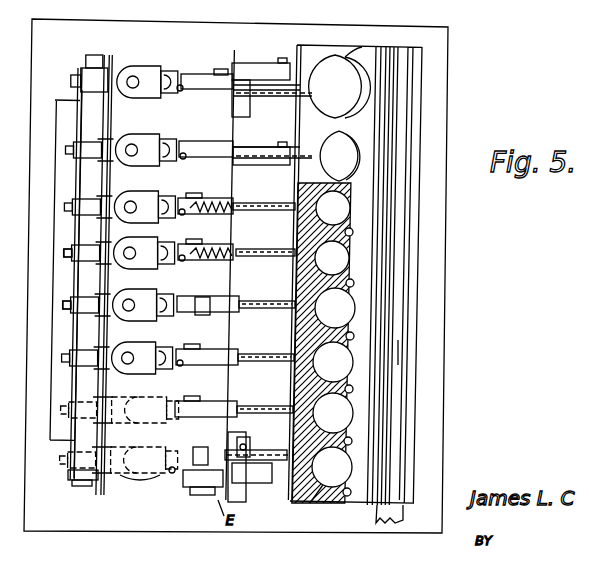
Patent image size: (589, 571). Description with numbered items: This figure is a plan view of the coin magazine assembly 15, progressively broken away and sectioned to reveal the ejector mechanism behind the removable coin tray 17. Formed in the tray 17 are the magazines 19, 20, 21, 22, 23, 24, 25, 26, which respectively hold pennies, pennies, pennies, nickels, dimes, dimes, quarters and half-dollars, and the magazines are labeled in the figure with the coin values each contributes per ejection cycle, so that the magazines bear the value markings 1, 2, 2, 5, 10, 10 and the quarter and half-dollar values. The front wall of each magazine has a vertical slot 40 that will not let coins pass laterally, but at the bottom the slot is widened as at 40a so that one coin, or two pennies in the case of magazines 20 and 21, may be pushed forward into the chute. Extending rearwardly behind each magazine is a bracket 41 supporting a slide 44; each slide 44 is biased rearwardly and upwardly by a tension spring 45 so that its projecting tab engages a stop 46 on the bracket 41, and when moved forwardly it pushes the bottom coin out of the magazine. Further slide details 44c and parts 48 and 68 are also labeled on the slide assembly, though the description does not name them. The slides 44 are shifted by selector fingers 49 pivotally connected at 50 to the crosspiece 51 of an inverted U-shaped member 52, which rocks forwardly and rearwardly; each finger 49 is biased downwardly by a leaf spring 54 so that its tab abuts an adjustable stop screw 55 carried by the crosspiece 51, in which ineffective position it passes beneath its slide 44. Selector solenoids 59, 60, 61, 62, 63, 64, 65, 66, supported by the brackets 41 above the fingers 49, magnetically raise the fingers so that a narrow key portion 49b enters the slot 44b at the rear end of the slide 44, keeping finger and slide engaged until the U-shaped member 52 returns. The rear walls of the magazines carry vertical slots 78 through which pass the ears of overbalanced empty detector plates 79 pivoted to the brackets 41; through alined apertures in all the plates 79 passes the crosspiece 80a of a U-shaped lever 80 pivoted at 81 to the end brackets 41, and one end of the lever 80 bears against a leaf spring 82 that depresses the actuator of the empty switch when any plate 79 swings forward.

The coin tray 17 is at (327, 33).
The coin magazine assembly 15 is at (364, 30).
The vertical slot 40 is at (357, 53).
The widened slot portion 40a is at (333, 504).
The eighth magazine 26 is at (458, 351).
The pivotal connection 50 is at (335, 86).
The seventh magazine 25 is at (341, 156).
The key 10 is at (332, 233).
The key 5 is at (335, 308).
The key 2 is at (333, 387).
The key 1 is at (332, 467).
The sixth magazine 24 is at (353, 229).
The fifth magazine 23 is at (352, 279).
The fourth magazine 22 is at (351, 334).
The third magazine 21 is at (350, 386).
The second magazine 20 is at (348, 433).
The first magazine 19 is at (348, 487).
The crosspiece 51 is at (84, 181).
The inverted U-shaped member 52 is at (64, 238).
The adjustable stop screws 55 is at (66, 306).
The selector solenoid 66 is at (136, 66).
The selector solenoid 65 is at (138, 134).
The selector solenoid 64 is at (135, 192).
The selector solenoid 63 is at (138, 238).
The selector solenoid 62 is at (134, 291).
The selector solenoid 61 is at (134, 343).
The selector solenoid 60 is at (134, 396).
The selector solenoid 59 is at (134, 446).
The U-shaped lever 80 is at (254, 56).
The pivot 81 is at (286, 58).
The crosspiece 80a is at (238, 105).
The empty detector plate 79 is at (205, 74).
The stop 46 is at (224, 70).
The key portion 49b is at (177, 98).
The bracket 41 is at (268, 152).
The rod 44c is at (215, 200).
The vertical slot 78 is at (290, 207).
The tension spring 45 is at (205, 247).
The selector finger 49 is at (201, 299).
The slide 44 is at (265, 304).
The slot 44b is at (215, 401).
The block 48 is at (250, 450).
The leaf spring 82 is at (217, 490).
The leaf spring 54 is at (78, 484).
The link 68 is at (140, 478).